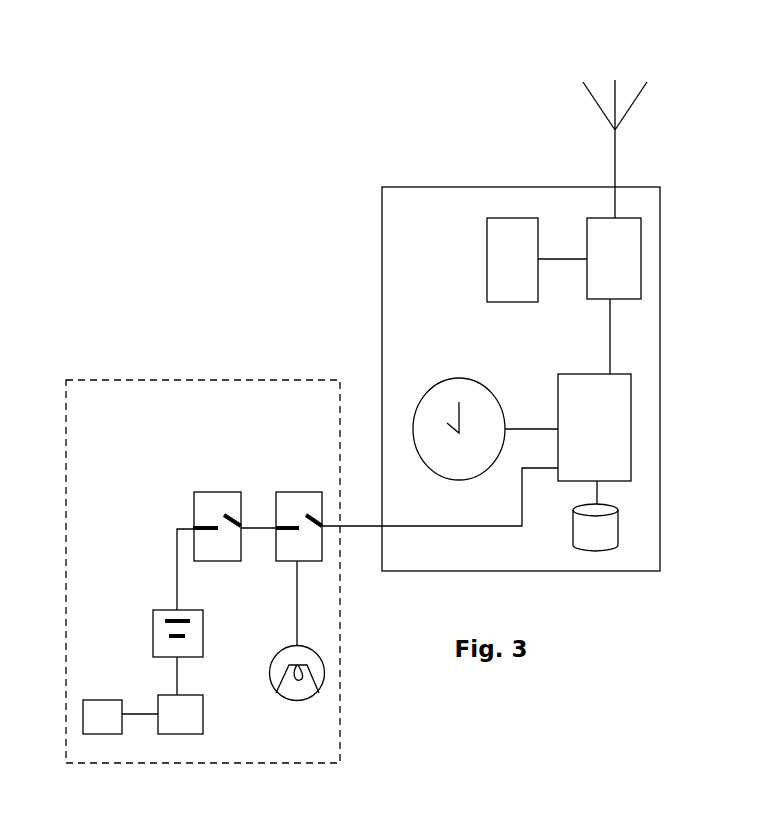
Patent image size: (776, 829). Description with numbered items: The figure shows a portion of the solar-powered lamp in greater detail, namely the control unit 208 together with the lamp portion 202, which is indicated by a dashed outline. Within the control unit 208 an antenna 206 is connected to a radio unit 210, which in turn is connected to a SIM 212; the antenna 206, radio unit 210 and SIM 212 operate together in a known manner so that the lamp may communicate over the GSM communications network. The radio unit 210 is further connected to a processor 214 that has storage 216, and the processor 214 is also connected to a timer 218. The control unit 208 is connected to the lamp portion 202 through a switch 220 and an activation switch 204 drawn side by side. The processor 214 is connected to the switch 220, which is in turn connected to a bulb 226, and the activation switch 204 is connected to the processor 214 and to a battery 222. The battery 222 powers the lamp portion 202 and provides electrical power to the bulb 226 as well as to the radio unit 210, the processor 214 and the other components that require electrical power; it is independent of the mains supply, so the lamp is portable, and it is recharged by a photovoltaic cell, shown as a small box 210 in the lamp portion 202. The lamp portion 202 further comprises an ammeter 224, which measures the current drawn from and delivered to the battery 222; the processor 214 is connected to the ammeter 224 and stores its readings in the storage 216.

The lamp portion 202 is at (242, 378).
The activation switch 204 is at (203, 490).
The antenna 206 is at (615, 153).
The control unit 208 is at (402, 185).
The radio unit 210 is at (642, 248).
The SIM 212 is at (505, 225).
The processor 214 is at (632, 426).
The storage 216 is at (617, 528).
The timer 218 is at (453, 378).
The switch 220 is at (290, 490).
The battery 222 is at (203, 635).
The ammeter 224 is at (97, 698).
The bulb 226 is at (283, 697).